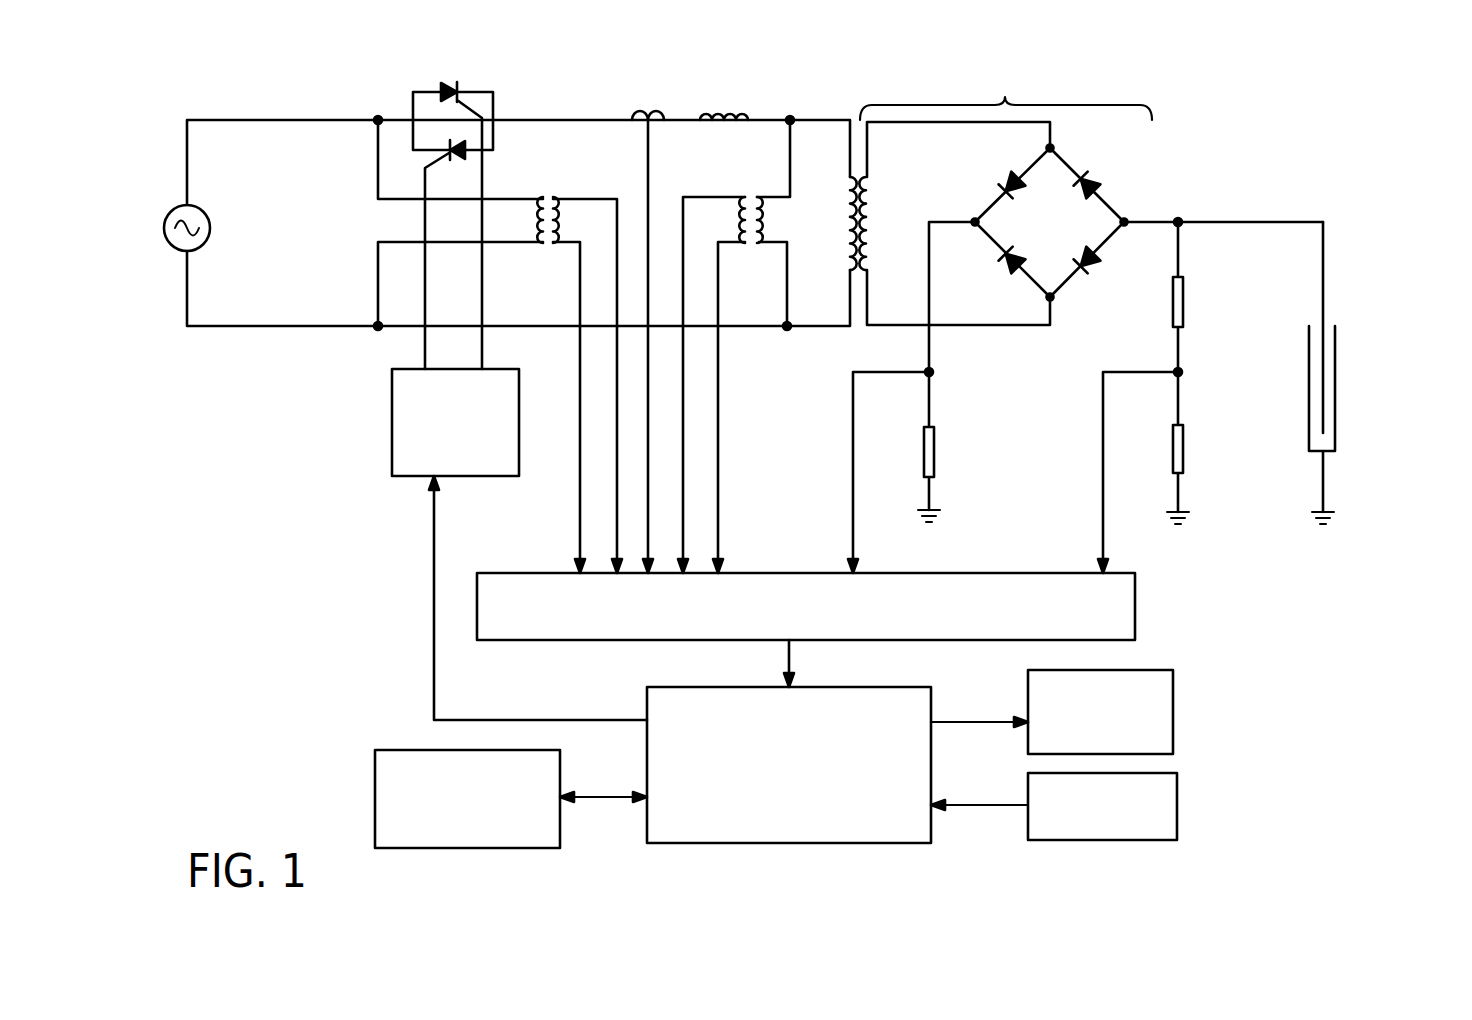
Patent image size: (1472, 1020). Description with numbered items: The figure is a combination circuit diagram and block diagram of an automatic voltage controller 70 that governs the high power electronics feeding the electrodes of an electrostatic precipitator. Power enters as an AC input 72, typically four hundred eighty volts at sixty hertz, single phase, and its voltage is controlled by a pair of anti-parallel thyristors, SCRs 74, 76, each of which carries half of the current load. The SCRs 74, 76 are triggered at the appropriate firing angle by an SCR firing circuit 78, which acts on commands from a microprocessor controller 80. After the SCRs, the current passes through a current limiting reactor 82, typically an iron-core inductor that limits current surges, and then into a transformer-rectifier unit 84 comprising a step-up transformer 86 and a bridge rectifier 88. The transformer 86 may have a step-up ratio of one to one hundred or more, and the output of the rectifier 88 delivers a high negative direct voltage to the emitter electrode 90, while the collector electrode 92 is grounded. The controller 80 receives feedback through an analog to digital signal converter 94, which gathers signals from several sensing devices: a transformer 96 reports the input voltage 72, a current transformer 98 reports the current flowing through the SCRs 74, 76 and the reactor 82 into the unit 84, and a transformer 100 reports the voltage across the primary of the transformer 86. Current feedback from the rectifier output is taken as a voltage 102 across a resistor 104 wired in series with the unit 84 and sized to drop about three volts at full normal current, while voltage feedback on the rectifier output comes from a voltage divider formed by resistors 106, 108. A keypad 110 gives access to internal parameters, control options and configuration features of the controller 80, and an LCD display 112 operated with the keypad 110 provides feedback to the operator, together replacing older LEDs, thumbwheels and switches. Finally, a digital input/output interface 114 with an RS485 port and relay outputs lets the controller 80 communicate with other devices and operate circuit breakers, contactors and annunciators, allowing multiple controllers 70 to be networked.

The automatic voltage controller 70 is at (1365, 592).
The AC input 72 is at (177, 207).
The SCR 74 is at (457, 92).
The SCR 76 is at (447, 148).
The SCR firing circuit 78 is at (390, 408).
The microprocessor controller 80 is at (745, 843).
The current limiting reactor 82 is at (722, 112).
The transformer-rectifier unit 84 is at (1006, 194).
The step-up transformer 86 is at (868, 195).
The bridge rectifier 88 is at (1100, 197).
The emitter electrode 90 is at (1325, 280).
The collector electrode 92 is at (1337, 380).
The analog to digital signal converter 94 is at (1137, 605).
The transformer 96 is at (562, 232).
The current transformer 98 is at (652, 103).
The transformer 100 is at (760, 230).
The voltage 102 is at (935, 370).
The resistor 104 is at (935, 450).
The resistor 106 is at (1183, 300).
The resistor 108 is at (1183, 455).
The keypad 110 is at (1180, 813).
The LCD display 112 is at (1175, 697).
The digital input/output interface 114 is at (445, 848).